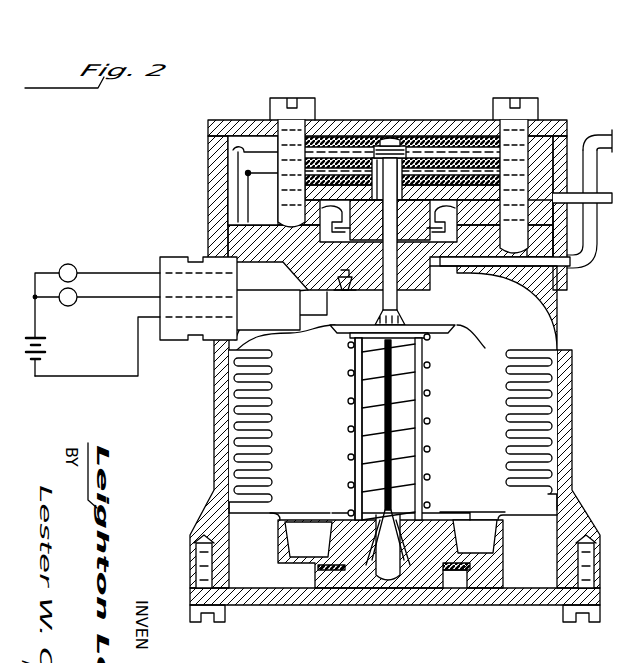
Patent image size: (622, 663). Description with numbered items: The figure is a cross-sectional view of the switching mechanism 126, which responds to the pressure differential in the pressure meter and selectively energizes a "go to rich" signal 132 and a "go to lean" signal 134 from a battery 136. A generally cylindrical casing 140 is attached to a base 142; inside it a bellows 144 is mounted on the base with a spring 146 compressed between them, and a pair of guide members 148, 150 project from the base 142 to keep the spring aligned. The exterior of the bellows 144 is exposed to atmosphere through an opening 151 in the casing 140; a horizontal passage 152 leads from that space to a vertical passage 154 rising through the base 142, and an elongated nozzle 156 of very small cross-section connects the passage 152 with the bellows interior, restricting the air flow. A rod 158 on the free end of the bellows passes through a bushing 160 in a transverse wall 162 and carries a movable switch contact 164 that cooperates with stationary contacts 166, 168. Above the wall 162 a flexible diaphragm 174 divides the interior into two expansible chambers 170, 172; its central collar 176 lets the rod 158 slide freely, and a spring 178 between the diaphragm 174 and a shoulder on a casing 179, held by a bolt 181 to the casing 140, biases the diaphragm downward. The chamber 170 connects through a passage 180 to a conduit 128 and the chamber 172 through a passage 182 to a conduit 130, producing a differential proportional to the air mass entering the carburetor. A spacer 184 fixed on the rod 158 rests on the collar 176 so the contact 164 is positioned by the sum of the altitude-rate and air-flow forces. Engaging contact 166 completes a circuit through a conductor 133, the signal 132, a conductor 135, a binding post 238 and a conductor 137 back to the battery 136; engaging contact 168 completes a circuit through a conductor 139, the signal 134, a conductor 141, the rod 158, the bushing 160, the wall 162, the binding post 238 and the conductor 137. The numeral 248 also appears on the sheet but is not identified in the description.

The switching mechanism 126 is at (293, 67).
The housing 248 is at (586, 163).
The conduit 128 is at (580, 268).
The conduit 130 is at (604, 192).
The signal 132 is at (71, 264).
The conductor 133 is at (35, 273).
The signal 134 is at (77, 304).
The conductor 135 is at (133, 271).
The battery 136 is at (46, 362).
The conductor 137 is at (140, 356).
The conductor 139 is at (51, 300).
The casing 140 is at (215, 391).
The conductor 141 is at (136, 299).
The base 142 is at (282, 600).
The bellows 144 is at (526, 513).
The spring 146 is at (430, 462).
The guide member 148 is at (356, 405).
The guide member 150 is at (424, 393).
The opening 151 is at (566, 440).
The passage 152 is at (467, 582).
The vertical passage 154 is at (386, 591).
The nozzle 156 is at (424, 359).
The rod 158 is at (398, 304).
The bushing 160 is at (349, 290).
The transverse wall 162 is at (487, 283).
The movable switch contact 164 is at (390, 146).
The stationary contact 166 is at (400, 140).
The stationary contact 168 is at (410, 155).
The expansible chamber 170 is at (238, 238).
The expansible chamber 172 is at (236, 208).
The flexible diaphragm 174 is at (236, 228).
The collar 176 is at (360, 140).
The spring 178 is at (362, 160).
The casing 179 is at (245, 176).
The passage 180 is at (418, 393).
The bolt 181 is at (535, 108).
The passage 182 is at (585, 226).
The spacer 184 is at (372, 150).
The binding post 238 is at (323, 294).